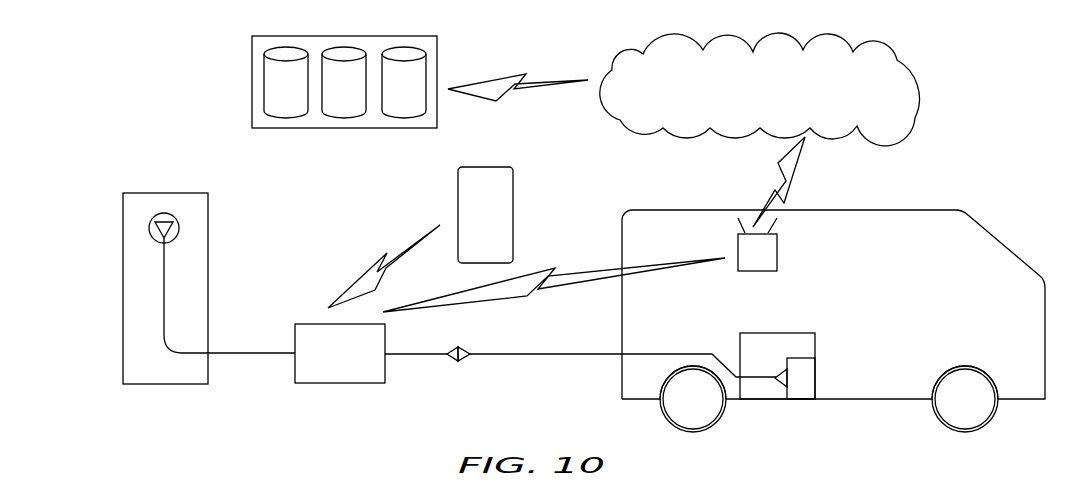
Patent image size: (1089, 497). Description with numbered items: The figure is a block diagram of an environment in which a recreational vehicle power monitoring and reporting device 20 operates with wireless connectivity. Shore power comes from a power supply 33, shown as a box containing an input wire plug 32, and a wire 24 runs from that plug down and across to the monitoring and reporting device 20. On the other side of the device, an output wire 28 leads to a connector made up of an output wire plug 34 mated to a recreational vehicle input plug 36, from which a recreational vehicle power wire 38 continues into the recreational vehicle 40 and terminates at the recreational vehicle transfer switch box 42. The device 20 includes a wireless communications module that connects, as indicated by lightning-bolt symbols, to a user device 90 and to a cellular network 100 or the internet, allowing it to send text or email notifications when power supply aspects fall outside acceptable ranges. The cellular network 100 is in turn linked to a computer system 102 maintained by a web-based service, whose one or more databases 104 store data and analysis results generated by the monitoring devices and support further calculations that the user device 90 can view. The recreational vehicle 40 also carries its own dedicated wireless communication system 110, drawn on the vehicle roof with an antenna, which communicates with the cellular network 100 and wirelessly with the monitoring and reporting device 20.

The recreational vehicle power monitoring and reporting device 20 is at (345, 384).
The wire 24 is at (232, 353).
The output wire 28 is at (420, 357).
The input wire plug 32 is at (150, 228).
The power supply 33 is at (185, 200).
The input wire 34 is at (452, 348).
The recreational vehicle input plug 36 is at (463, 359).
The recreational vehicle power wire 38 is at (586, 353).
The recreational vehicle 40 is at (993, 199).
The recreational vehicle transfer switch box 42 is at (800, 385).
The user device 90 is at (505, 210).
The cellular network 100 is at (782, 120).
The computer system 102 is at (258, 45).
The databases 104 is at (403, 105).
The wireless communication system 110 is at (760, 258).